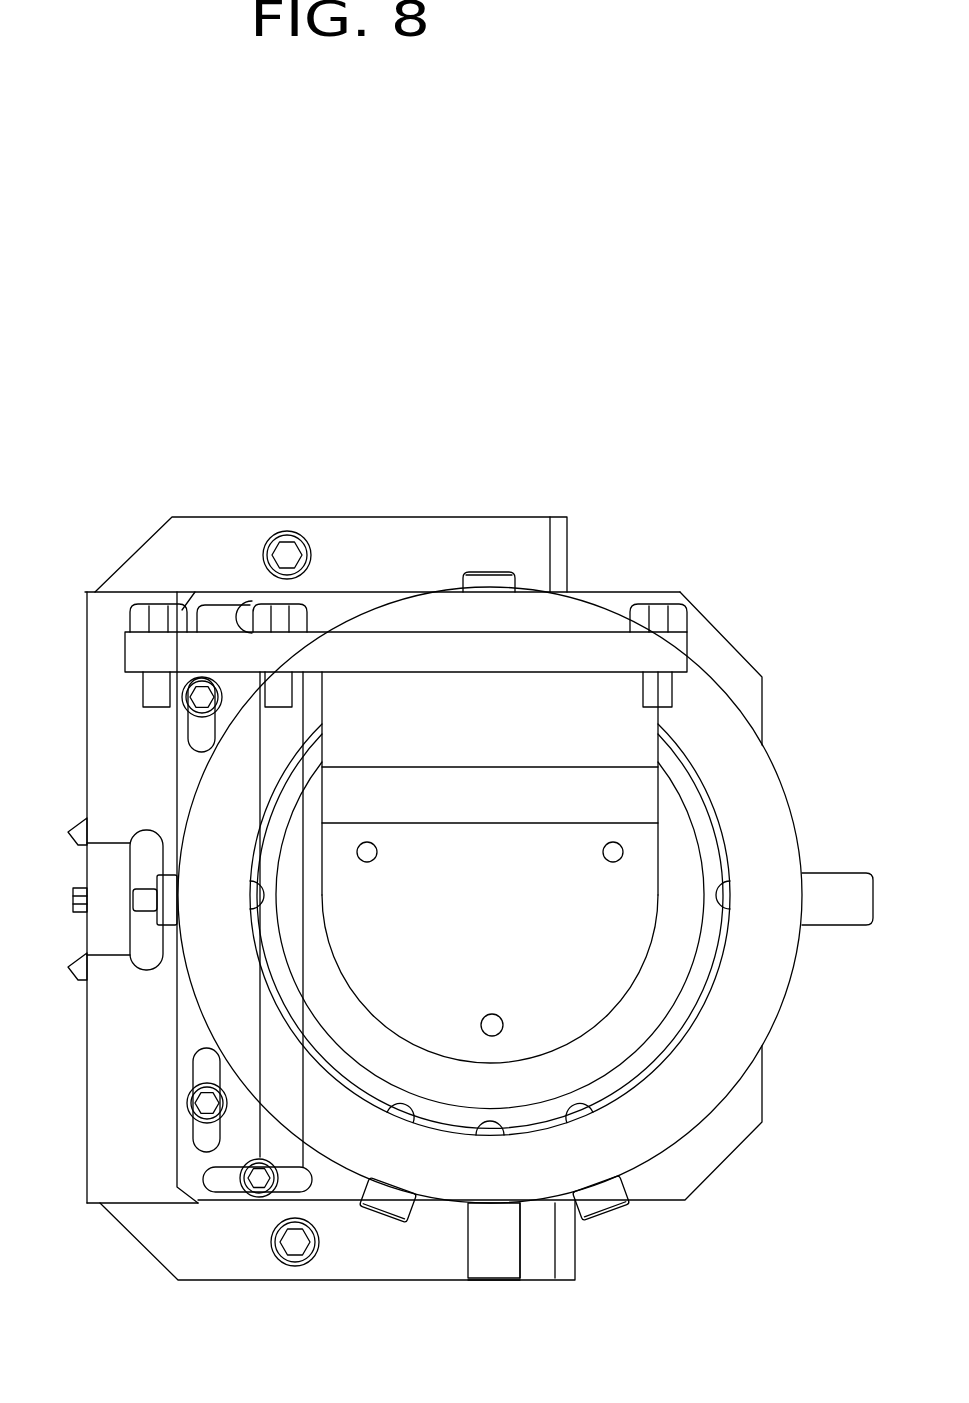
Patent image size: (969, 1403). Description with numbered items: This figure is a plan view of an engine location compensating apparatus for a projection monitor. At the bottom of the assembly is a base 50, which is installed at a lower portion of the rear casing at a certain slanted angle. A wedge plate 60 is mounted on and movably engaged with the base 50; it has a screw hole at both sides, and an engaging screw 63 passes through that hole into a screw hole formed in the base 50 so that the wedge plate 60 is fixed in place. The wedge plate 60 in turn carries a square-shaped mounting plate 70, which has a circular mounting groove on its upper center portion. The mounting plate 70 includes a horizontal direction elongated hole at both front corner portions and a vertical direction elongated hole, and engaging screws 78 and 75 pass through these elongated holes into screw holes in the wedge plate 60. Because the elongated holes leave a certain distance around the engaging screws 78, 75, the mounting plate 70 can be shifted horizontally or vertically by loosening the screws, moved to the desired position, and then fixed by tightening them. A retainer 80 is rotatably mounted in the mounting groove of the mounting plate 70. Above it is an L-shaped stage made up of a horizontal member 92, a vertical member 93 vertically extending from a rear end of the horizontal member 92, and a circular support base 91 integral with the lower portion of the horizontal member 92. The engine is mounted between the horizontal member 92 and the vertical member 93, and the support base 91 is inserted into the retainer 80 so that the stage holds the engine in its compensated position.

The base 50 is at (418, 530).
The wedge plate 60 is at (112, 1018).
The engaging screw 63 is at (290, 552).
The mounting plate 70 is at (187, 1158).
The engaging screw 75 is at (245, 1182).
The engaging screw 78 is at (190, 1102).
The retainer 80 is at (755, 999).
The support base 91 is at (683, 893).
The horizontal member 92 is at (633, 892).
The vertical member 93 is at (605, 645).